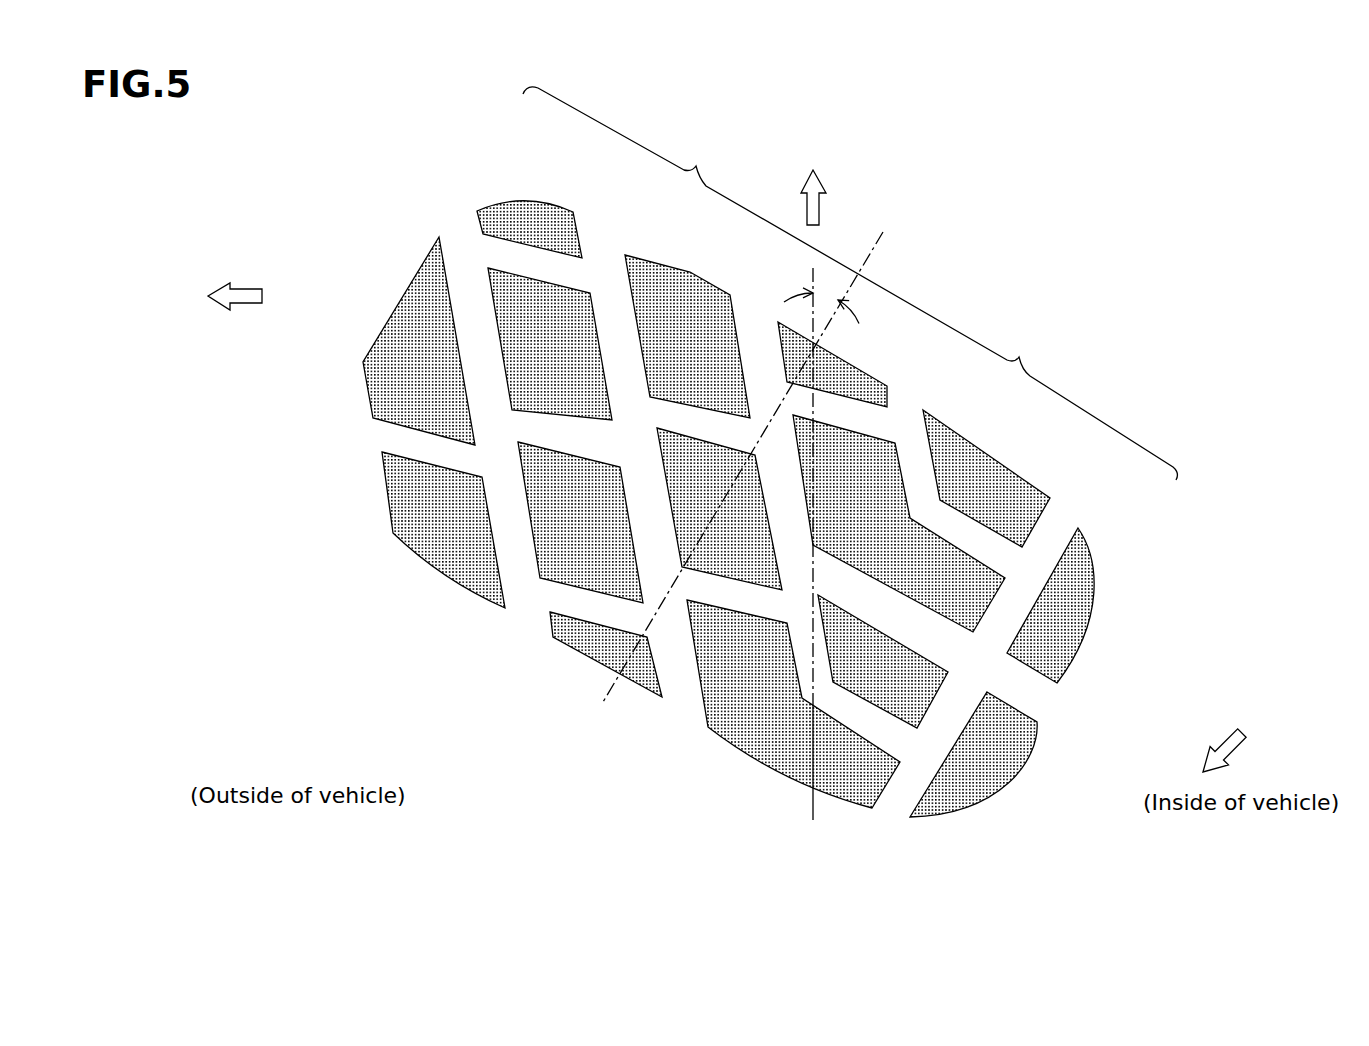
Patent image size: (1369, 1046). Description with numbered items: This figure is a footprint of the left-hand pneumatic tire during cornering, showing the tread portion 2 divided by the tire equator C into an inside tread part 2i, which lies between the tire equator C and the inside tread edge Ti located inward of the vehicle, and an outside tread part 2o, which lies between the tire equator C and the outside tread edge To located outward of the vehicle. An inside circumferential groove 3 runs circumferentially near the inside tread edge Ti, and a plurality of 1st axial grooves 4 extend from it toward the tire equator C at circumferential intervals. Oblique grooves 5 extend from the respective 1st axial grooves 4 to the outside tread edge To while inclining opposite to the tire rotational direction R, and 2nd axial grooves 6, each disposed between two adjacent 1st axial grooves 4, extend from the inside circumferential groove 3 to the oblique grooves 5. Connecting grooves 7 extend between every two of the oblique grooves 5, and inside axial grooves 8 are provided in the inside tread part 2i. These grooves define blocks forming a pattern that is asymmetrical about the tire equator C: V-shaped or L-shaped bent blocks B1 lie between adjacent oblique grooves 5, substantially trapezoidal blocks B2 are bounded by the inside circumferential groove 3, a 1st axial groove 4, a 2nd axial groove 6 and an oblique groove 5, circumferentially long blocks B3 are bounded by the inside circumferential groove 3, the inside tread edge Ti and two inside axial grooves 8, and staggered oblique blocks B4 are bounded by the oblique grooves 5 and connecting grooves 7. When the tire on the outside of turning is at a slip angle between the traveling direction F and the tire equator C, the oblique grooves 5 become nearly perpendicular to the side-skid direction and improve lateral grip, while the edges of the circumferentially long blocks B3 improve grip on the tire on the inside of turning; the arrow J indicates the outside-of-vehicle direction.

The tread portion 2 is at (1087, 388).
The outside tread part 2o is at (631, 129).
The inside tread part 2i is at (1097, 396).
The inside circumferential groove 3 is at (897, 815).
The 1st axial grooves 4 is at (992, 552).
The oblique grooves 5 is at (475, 351).
The 2nd axial grooves 6 is at (937, 638).
The connecting grooves 7 is at (553, 433).
The inside axial grooves 8 is at (1020, 683).
The outside tread edge To is at (425, 253).
The inside tread edge Ti is at (1087, 638).
The bent block B1 is at (889, 565).
The trapezoidal block B2 is at (976, 502).
The circumferentially long block B3 is at (1049, 620).
The oblique block B4 is at (545, 383).
The tire equator C is at (750, 451).
The traveling direction F is at (813, 182).
The outside direction J is at (245, 296).
The tire rotational direction R is at (1225, 732).